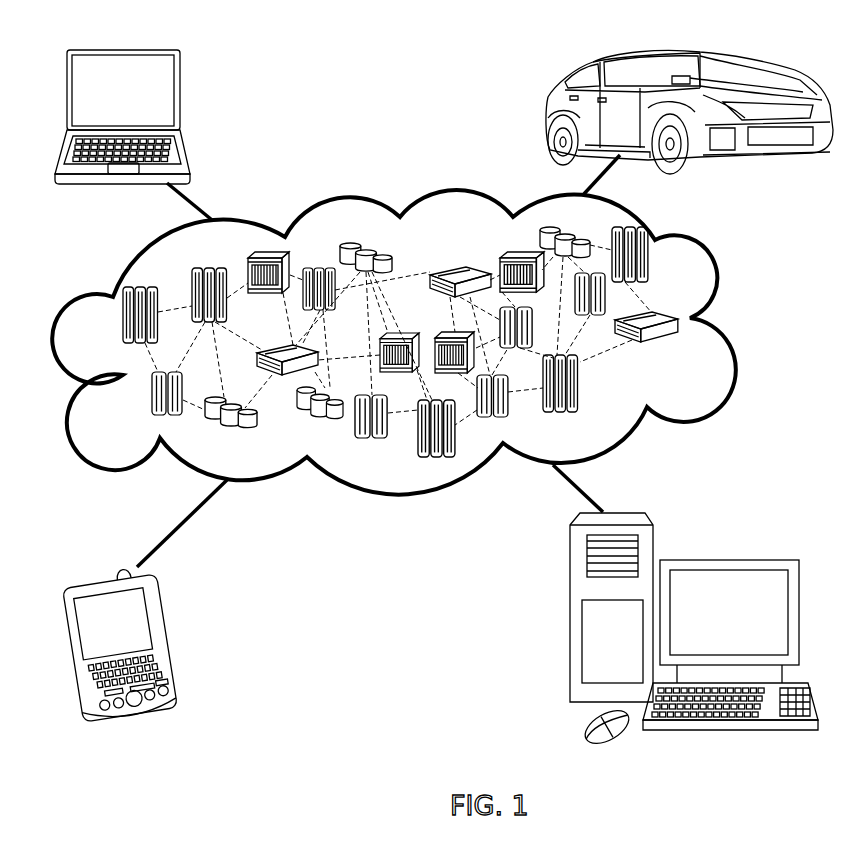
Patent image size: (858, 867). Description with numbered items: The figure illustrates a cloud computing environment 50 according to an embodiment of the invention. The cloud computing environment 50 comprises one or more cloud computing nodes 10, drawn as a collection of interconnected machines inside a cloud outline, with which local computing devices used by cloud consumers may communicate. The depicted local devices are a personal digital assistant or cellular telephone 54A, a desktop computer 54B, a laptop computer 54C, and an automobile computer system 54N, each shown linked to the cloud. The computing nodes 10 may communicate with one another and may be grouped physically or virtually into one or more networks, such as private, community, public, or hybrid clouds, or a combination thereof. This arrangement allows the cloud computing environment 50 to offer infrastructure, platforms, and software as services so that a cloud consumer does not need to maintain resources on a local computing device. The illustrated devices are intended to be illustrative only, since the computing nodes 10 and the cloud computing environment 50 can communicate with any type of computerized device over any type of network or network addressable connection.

The cloud computing nodes 10 is at (442, 400).
The cloud computing environment 50 is at (730, 323).
The personal digital assistant (PDA) or cellular telephone 54A is at (173, 634).
The desktop computer 54B is at (727, 560).
The laptop computer 54C is at (181, 100).
The automobile computer system 54N is at (547, 113).